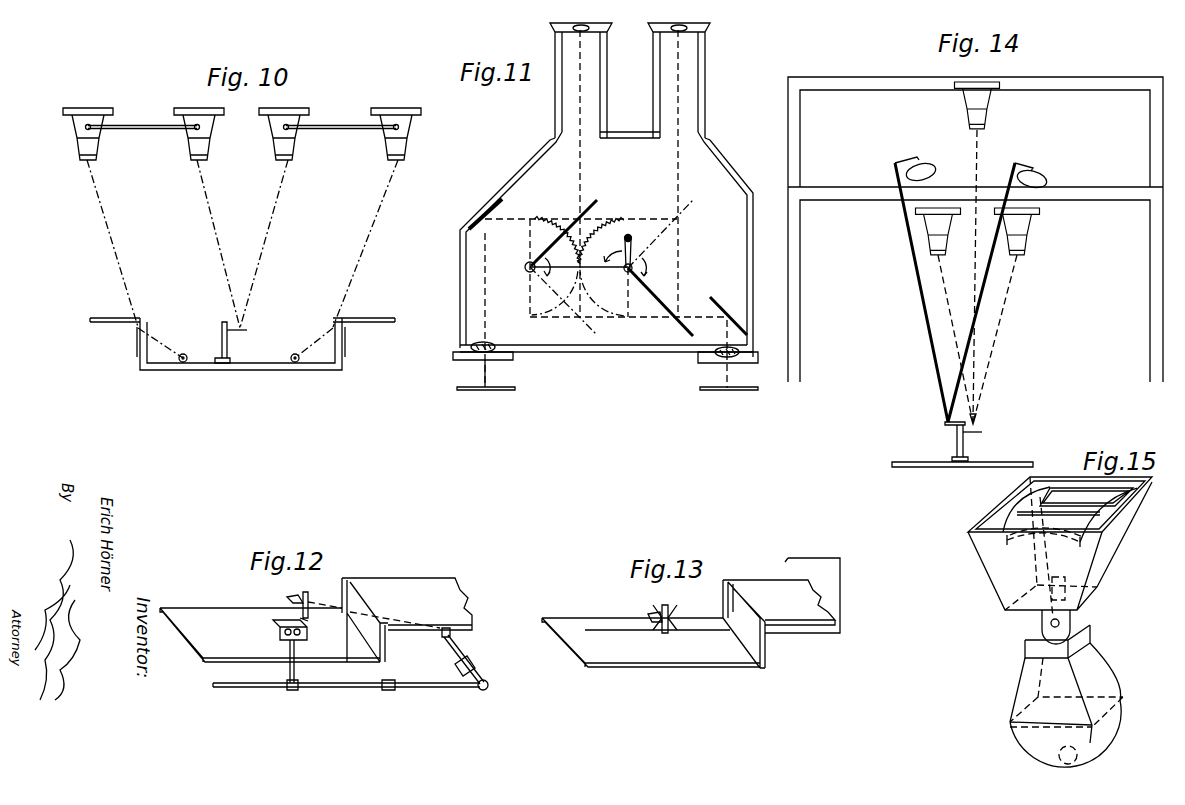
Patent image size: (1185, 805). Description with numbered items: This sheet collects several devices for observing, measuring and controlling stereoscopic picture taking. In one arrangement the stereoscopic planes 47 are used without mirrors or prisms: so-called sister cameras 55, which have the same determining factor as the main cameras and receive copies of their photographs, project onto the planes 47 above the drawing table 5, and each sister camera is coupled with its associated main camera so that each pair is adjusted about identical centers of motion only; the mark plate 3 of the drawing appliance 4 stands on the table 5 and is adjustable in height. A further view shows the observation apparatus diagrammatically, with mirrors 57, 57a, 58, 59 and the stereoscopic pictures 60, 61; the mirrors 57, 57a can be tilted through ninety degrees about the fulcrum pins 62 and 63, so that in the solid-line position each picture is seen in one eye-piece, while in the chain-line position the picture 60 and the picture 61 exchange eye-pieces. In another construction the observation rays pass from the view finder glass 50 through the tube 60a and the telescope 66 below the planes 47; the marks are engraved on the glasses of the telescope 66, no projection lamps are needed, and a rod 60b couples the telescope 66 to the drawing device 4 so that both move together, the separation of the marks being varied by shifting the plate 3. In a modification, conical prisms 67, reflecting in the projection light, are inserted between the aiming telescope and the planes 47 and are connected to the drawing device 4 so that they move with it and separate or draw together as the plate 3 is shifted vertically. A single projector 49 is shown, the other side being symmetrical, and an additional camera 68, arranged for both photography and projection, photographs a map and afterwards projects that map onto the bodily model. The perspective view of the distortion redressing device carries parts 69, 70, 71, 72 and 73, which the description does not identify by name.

In FIG. 10, the mark plate 3 is at (247, 330).
In FIG. 14, the mark plate 3 is at (982, 432).
In FIG. 12, the mark plate 3 is at (287, 598).
In FIG. 13, the mark plate 3 is at (648, 615).
In FIG. 10, the drawing appliance 4 is at (222, 340).
In FIG. 14, the drawing appliance 4 is at (957, 443).
In FIG. 12, the drawing appliance 4 is at (308, 600).
In FIG. 13, the drawing appliance 4 is at (670, 607).
In FIG. 10, the drawing table 5 is at (265, 370).
In FIG. 14, the drawing table 5 is at (908, 462).
In FIG. 12, the drawing table 5 is at (180, 612).
In FIG. 13, the drawing table 5 is at (605, 657).
In FIG. 10, the stereoscopic planes 47 is at (385, 323).
In FIG. 12, the stereoscopic planes 47 is at (408, 578).
In FIG. 13, the stereoscopic planes 47 is at (772, 580).
In FIG. 10, the projector 49 is at (270, 126).
In FIG. 14, the projector 49 is at (1005, 228).
In FIG. 12, the double glass 50 is at (273, 624).
In FIG. 10, the sister cameras 55 is at (87, 147).
In FIG. 11, the mirror 57 is at (601, 200).
In FIG. 11, the mirror 57a is at (688, 338).
In FIG. 11, the mirror 58 is at (488, 212).
In FIG. 11, the mirror 59 is at (724, 307).
In FIG. 11, the stereoscopic picture 60 is at (507, 390).
In FIG. 12, the tube 60a is at (355, 690).
In FIG. 12, the rod 60b is at (325, 610).
In FIG. 11, the stereoscopic picture 61 is at (752, 390).
In FIG. 11, the fulcrum pin 62 is at (527, 272).
In FIG. 11, the fulcrum pin 63 is at (640, 268).
In FIG. 12, the telescope 66 is at (450, 637).
In FIG. 13, the conical prisms 67 is at (795, 560).
In FIG. 14, the additional camera 68 is at (985, 103).
In FIG. 15, the lamp bulb 69 is at (1097, 720).
In FIG. 15, the pivot 70 is at (1068, 618).
In FIG. 15, the mirror 71 is at (1083, 507).
In FIG. 15, the rod 72 is at (1083, 580).
In FIG. 15, the bracket 73 is at (1017, 538).